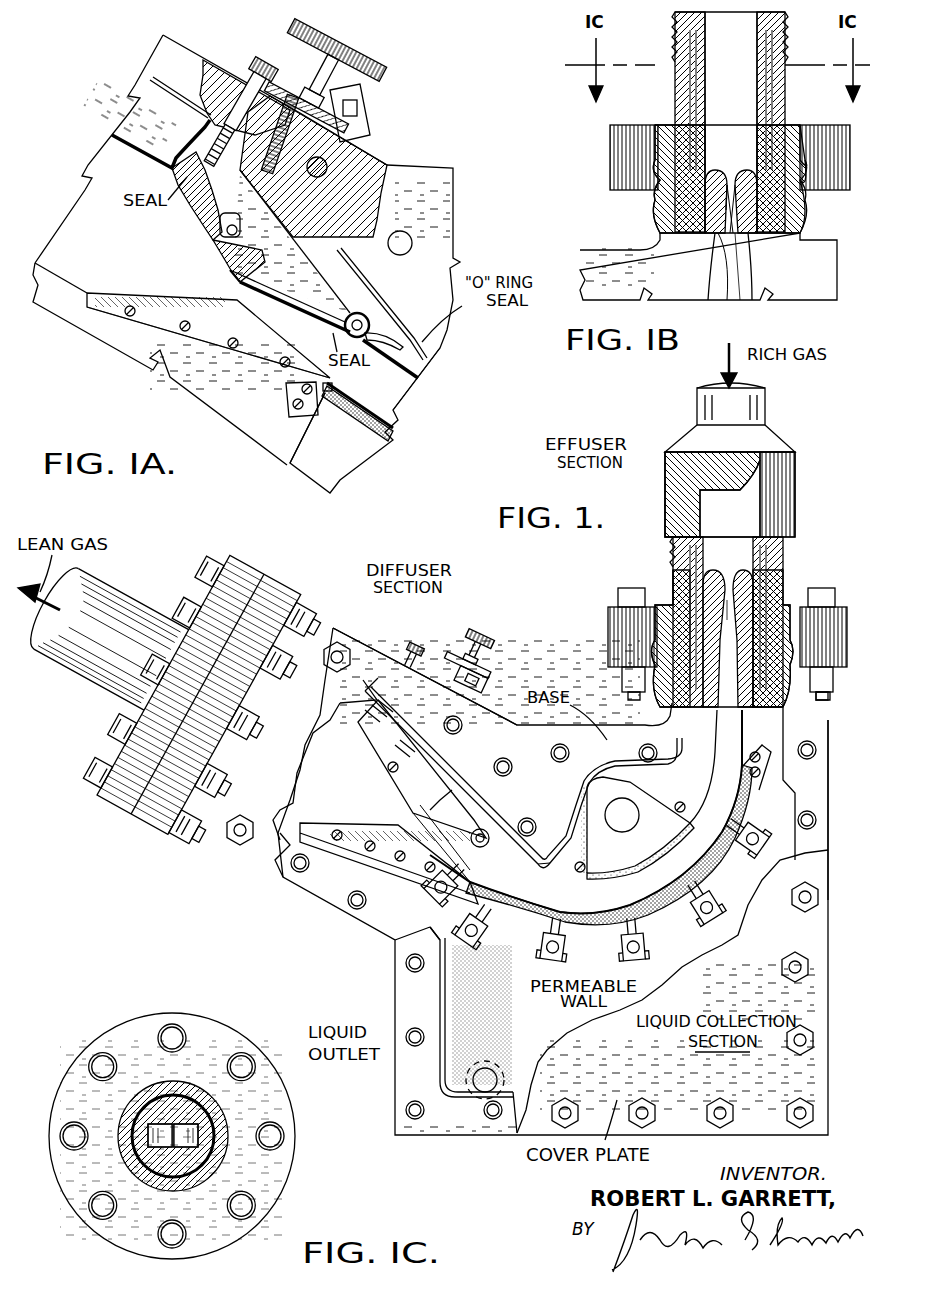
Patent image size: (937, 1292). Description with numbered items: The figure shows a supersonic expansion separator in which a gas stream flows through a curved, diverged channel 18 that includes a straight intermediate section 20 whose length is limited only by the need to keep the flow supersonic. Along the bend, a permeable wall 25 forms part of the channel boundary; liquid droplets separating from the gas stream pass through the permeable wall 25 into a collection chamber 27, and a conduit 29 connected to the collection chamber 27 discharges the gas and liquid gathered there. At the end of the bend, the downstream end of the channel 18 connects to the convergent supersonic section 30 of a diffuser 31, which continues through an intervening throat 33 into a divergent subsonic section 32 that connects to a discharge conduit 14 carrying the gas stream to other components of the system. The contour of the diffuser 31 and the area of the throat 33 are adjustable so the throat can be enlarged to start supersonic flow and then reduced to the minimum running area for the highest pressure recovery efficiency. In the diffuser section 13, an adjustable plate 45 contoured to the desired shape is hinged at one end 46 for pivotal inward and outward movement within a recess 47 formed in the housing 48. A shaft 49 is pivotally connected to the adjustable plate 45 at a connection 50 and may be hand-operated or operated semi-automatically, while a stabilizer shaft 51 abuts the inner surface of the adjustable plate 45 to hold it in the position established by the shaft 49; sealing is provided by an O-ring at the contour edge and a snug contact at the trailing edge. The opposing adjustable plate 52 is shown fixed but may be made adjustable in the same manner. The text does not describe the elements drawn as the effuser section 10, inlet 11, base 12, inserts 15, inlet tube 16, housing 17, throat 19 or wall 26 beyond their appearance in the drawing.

In FIG. 1, the effuser section 10 is at (656, 512).
In FIG. 1, the rich gas inlet 11 is at (745, 412).
In FIG. 1B, the base 12 is at (816, 270).
In FIG. 1, the base 12 is at (840, 812).
In FIG. 1, the diffuser section 13 is at (399, 652).
In FIG. 1, the discharge conduit 14 is at (103, 620).
In FIG. 1B, the nozzle inserts 15 is at (700, 192).
In FIG. 1, the nozzle inserts 15 is at (705, 580).
In FIG. 1C, the nozzle inserts 15 is at (140, 1122).
In FIG. 1B, the inlet tube 16 is at (738, 66).
In FIG. 1, the inlet tube 16 is at (740, 524).
In FIG. 1, the nozzle housing 17 is at (725, 673).
In FIG. 1B, the channel 18 is at (735, 272).
In FIG. 1, the channel 18 is at (717, 807).
In FIG. 1A, the channel 18 is at (390, 390).
In FIG. 1B, the nozzle throat 19 is at (726, 200).
In FIG. 1, the nozzle throat 19 is at (727, 605).
In FIG. 1C, the nozzle throat 19 is at (175, 1128).
In FIG. 1, the straight intermediate section 20 is at (822, 703).
In FIG. 1, the permeable wall 25 is at (707, 850).
In FIG. 1A, the permeable wall 25 is at (390, 427).
In FIG. 1, the channel inner wall 26 is at (643, 860).
In FIG. 1, the collection chamber 27 is at (522, 1036).
In FIG. 1A, the collection chamber 27 is at (323, 443).
In FIG. 1, the conduit 29 is at (470, 1075).
In FIG. 1, the convergent supersonic section 30 is at (480, 830).
In FIG. 1A, the convergent supersonic section 30 is at (290, 333).
In FIG. 1, the diffuser 31 is at (425, 802).
In FIG. 1, the divergent subsonic section 32 is at (332, 781).
In FIG. 1A, the divergent subsonic section 32 is at (103, 202).
In FIG. 1, the throat 33 is at (405, 820).
In FIG. 1A, the throat 33 is at (240, 298).
In FIG. 1A, the adjustable plate 45 is at (218, 223).
In FIG. 1A, the hinged end 46 is at (355, 320).
In FIG. 1A, the recess 47 is at (352, 160).
In FIG. 1A, the housing 48 is at (213, 80).
In FIG. 1A, the shaft 49 is at (323, 80).
In FIG. 1A, the pivotal connection 50 is at (218, 243).
In FIG. 1A, the stabilizer shaft 51 is at (207, 130).
In FIG. 1A, the opposing adjustable plate 52 is at (157, 308).